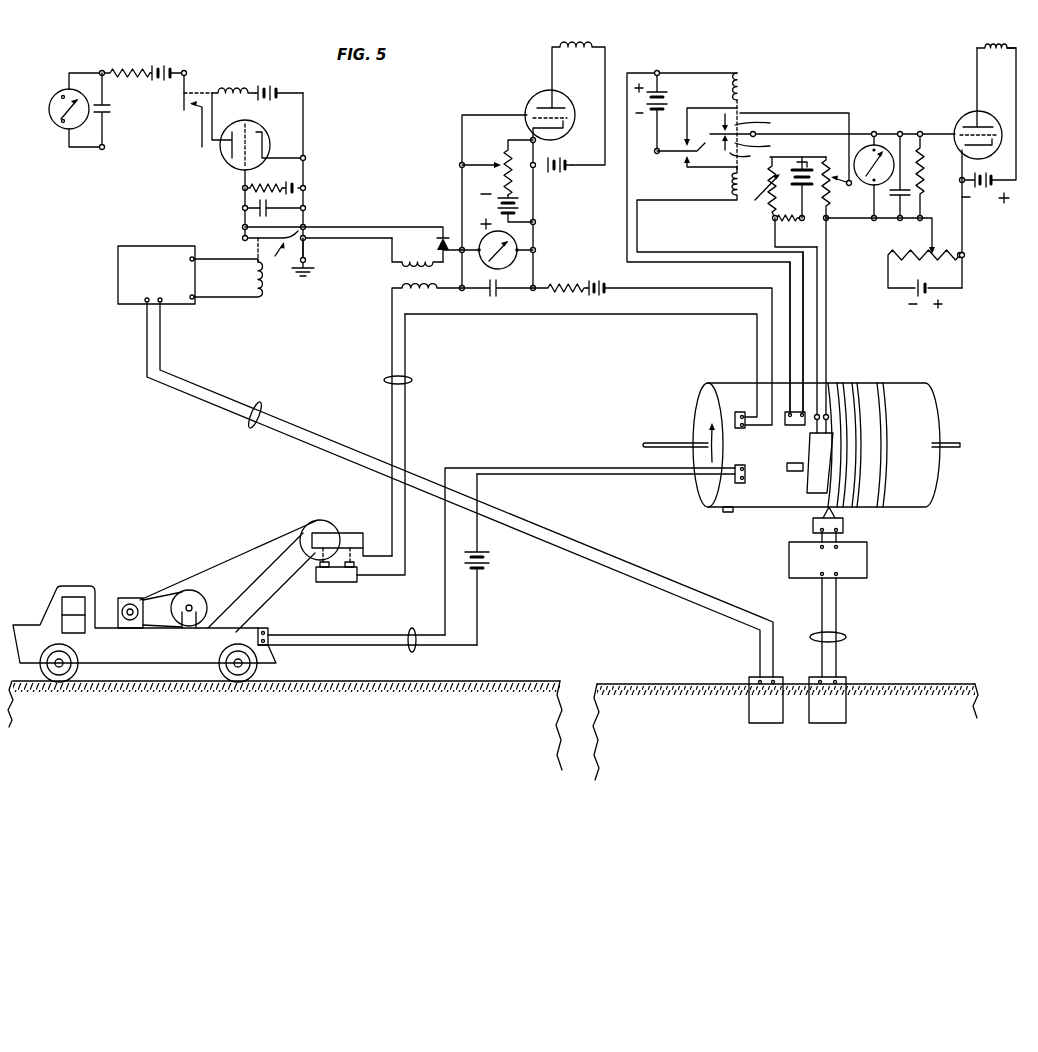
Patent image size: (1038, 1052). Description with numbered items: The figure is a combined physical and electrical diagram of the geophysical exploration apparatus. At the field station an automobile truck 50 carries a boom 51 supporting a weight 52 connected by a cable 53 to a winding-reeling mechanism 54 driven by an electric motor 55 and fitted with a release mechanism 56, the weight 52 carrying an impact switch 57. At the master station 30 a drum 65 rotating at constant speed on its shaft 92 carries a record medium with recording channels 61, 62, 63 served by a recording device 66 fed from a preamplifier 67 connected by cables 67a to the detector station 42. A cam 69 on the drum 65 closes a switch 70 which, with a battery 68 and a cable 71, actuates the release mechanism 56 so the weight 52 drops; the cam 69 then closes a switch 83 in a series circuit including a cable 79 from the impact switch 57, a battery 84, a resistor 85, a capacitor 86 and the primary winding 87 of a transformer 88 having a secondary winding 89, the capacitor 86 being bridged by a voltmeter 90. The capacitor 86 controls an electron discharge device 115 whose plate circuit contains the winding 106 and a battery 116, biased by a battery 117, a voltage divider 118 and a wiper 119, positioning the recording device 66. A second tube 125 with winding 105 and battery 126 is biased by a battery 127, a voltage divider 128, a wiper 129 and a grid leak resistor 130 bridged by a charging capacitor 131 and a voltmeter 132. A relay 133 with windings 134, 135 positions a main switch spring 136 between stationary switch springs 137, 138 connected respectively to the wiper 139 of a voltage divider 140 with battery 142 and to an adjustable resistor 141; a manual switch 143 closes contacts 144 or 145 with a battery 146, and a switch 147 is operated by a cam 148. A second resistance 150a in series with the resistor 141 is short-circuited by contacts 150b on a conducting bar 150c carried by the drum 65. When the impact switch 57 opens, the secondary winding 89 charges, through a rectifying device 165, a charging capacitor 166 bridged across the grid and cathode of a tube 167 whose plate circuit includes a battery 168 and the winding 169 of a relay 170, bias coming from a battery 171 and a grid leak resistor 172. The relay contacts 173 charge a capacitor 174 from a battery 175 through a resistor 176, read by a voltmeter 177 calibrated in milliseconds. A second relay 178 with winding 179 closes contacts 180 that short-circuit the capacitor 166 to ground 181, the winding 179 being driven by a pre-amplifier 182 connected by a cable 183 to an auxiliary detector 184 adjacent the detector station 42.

The master station 30 is at (623, 446).
The detector station 42 is at (838, 718).
The automobile truck 50 is at (162, 656).
The boom 51 is at (275, 586).
The weight 52 is at (345, 578).
The cable 53 is at (274, 545).
The winding-reeling mechanism 54 is at (184, 592).
The electric motor 55 is at (128, 596).
The release mechanism 56 is at (272, 629).
The impact switch 57 is at (366, 545).
The recording channel 61 is at (831, 382).
The recording channel 62 is at (857, 386).
The recording channel 63 is at (887, 386).
The drum 65 is at (900, 518).
The recording device 66 is at (845, 528).
The preamplifier 67 is at (868, 570).
The cables 67a is at (848, 637).
The battery 68 is at (492, 566).
The cam 69 is at (725, 515).
The switch 70 is at (745, 477).
The cable 71 is at (414, 652).
The cable 79 is at (412, 384).
The switch 83 is at (740, 410).
The battery 84 is at (609, 284).
The resistor 85 is at (576, 284).
The capacitor 86 is at (491, 300).
The primary winding 87 is at (396, 296).
The transformer 88 is at (376, 283).
The secondary winding 89 is at (426, 258).
The voltmeter 90 is at (520, 246).
The shaft 92 is at (668, 443).
The winding 105 is at (990, 43).
The winding 106 is at (589, 44).
The electron discharge device 115 is at (527, 103).
The battery source of plate current supply 116 is at (558, 174).
The battery source of bias 117 is at (495, 200).
The voltage divider 118 is at (522, 190).
The adjustable wiper 119 is at (480, 164).
The electron discharge tube 125 is at (956, 119).
The battery source of plate current supply 126 is at (982, 190).
The battery source of bias 127 is at (914, 290).
The voltage divider 128 is at (952, 262).
The adjustable wiper 129 is at (926, 246).
The grid leak resistor 130 is at (923, 187).
The charging capacitor 131 is at (893, 205).
The voltmeter 132 is at (858, 139).
The relay 133 is at (746, 53).
The operating winding 134 is at (742, 98).
The operating winding 135 is at (729, 188).
The main movable switch spring 136 is at (821, 133).
The stationary switch spring 137 is at (748, 116).
The stationary switch spring 138 is at (751, 163).
The adjustable wiper 139 is at (836, 190).
The voltage divider 140 is at (790, 222).
The adjustable resistor 141 is at (758, 201).
The battery 142 is at (808, 160).
The manually operable switch 143 is at (655, 178).
The contacts 144 is at (683, 148).
The contacts 145 is at (683, 164).
The battery 146 is at (668, 93).
The switch 147 is at (792, 428).
The cam 148 is at (785, 465).
The second resistance 150a is at (771, 226).
The contacts 150b is at (832, 432).
The conducting bar 150c is at (806, 495).
The rectifying device 165 is at (446, 236).
The charging capacitor 166 is at (243, 189).
The electron discharge device 167 is at (256, 125).
The battery source of plate current supply 168 is at (270, 88).
The operating winding 169 is at (234, 90).
The relay 170 is at (219, 55).
The battery source of bias 171 is at (306, 188).
The grid leak resistor 172 is at (292, 182).
The contacts 173 is at (188, 118).
The charging capacitor 174 is at (108, 111).
The source of battery voltage 175 is at (160, 64).
The resistor 176 is at (125, 68).
The voltmeter 177 is at (57, 93).
The second relay 178 is at (284, 323).
The operating winding 179 is at (266, 283).
The contacts 180 is at (295, 236).
The ground potential 181 is at (309, 257).
The pre-amplifier 182 is at (156, 275).
The cable 183 is at (264, 408).
The auxiliary detector 184 is at (752, 722).